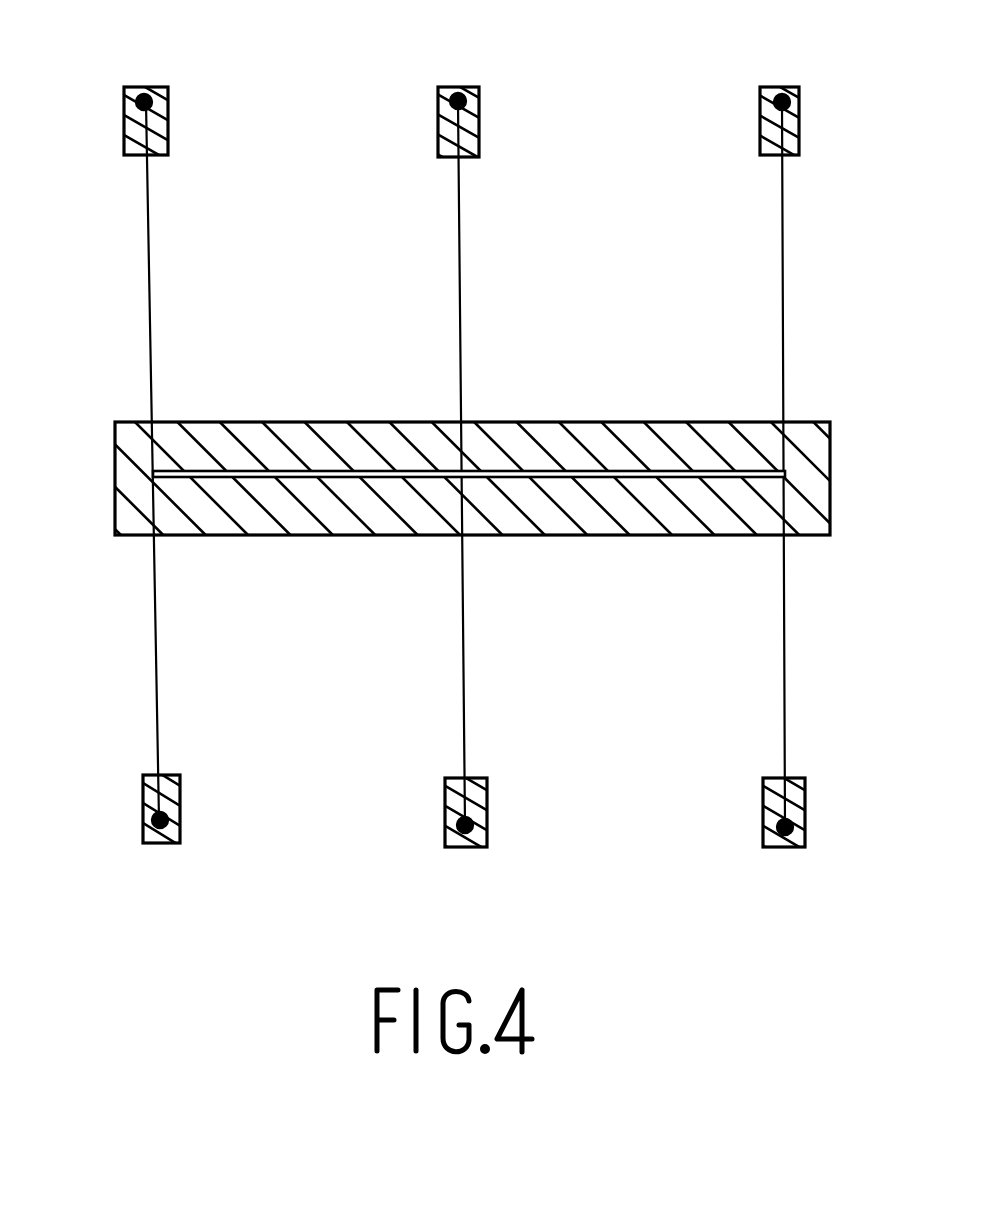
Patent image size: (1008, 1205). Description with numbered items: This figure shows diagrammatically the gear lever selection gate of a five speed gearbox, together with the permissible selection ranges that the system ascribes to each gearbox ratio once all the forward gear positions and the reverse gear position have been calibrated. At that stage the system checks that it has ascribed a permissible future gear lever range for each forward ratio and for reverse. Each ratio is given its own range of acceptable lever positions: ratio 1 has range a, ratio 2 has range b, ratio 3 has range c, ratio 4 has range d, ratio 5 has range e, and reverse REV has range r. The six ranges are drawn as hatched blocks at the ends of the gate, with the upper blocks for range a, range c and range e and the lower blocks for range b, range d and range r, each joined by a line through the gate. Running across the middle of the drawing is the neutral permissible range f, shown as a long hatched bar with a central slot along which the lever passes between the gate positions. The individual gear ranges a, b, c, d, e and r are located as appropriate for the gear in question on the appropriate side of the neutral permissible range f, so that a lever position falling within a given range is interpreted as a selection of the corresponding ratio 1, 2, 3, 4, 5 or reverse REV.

The permissible selection range a is at (124, 119).
The permissible selection range b is at (143, 803).
The permissible selection range c is at (479, 126).
The permissible selection range d is at (445, 808).
The permissible selection range e is at (799, 131).
The permissible selection range r is at (805, 803).
The neutral permissible range f is at (830, 474).
The ratio 1 is at (113, 107).
The ratio 2 is at (130, 830).
The ratio 3 is at (480, 108).
The ratio 4 is at (445, 833).
The ratio 5 is at (802, 108).
The reverse REV is at (808, 829).